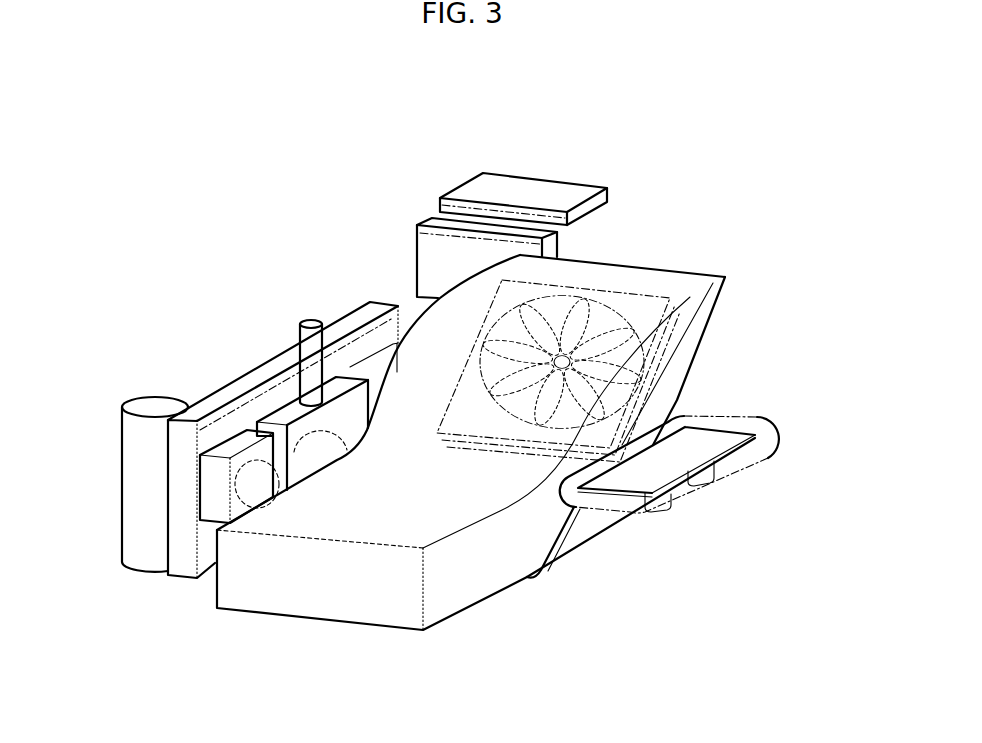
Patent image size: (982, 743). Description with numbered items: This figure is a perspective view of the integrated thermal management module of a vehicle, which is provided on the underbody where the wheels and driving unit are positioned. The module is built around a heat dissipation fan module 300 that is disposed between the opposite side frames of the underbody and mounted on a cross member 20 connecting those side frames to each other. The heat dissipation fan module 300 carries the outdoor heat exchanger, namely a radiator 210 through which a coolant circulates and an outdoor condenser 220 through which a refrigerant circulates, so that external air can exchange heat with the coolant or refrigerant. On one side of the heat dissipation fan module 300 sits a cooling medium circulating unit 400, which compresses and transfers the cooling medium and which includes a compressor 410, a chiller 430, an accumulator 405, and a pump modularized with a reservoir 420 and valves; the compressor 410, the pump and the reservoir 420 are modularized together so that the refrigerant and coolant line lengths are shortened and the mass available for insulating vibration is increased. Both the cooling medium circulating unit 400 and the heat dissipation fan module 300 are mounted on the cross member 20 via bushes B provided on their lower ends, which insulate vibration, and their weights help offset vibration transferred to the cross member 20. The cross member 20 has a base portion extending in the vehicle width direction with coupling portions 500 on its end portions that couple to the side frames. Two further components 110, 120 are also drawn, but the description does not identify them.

The cross member 20 is at (733, 452).
The bushes B is at (662, 505).
The control box 110 is at (430, 217).
The cover plate 120 is at (530, 192).
The radiator 210 is at (657, 329).
The outdoor condenser 220 is at (660, 355).
The heat dissipation fan module 300 is at (442, 605).
The cooling medium circulating unit 400 is at (215, 435).
The accumulator 405 is at (138, 556).
The compressor 410 is at (300, 455).
The reservoir 420 is at (310, 320).
The chiller 430 is at (213, 498).
The coupling portions 500 is at (782, 439).